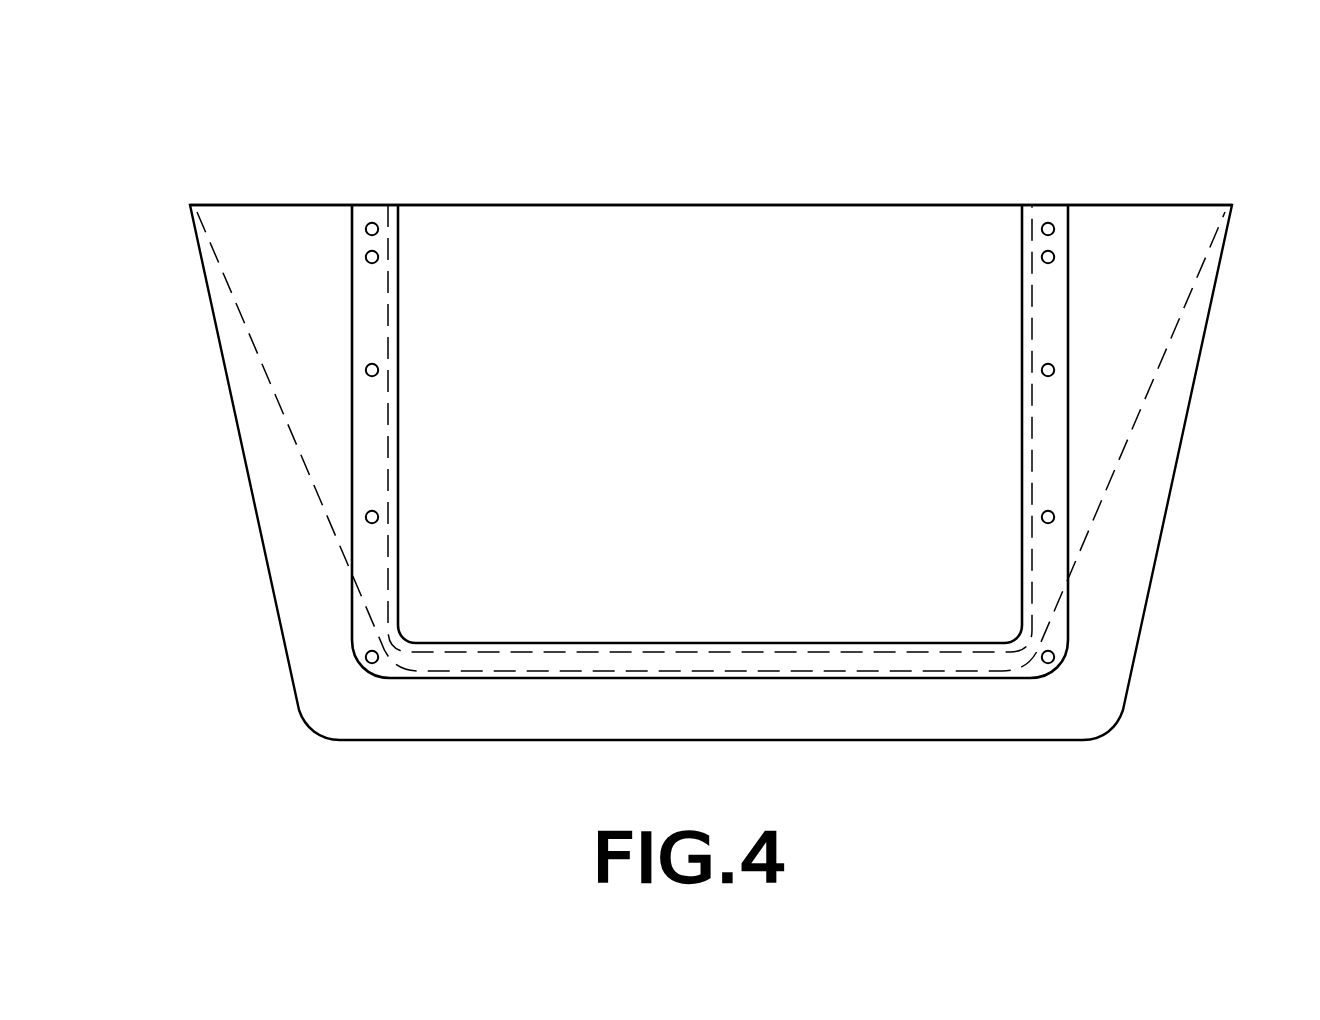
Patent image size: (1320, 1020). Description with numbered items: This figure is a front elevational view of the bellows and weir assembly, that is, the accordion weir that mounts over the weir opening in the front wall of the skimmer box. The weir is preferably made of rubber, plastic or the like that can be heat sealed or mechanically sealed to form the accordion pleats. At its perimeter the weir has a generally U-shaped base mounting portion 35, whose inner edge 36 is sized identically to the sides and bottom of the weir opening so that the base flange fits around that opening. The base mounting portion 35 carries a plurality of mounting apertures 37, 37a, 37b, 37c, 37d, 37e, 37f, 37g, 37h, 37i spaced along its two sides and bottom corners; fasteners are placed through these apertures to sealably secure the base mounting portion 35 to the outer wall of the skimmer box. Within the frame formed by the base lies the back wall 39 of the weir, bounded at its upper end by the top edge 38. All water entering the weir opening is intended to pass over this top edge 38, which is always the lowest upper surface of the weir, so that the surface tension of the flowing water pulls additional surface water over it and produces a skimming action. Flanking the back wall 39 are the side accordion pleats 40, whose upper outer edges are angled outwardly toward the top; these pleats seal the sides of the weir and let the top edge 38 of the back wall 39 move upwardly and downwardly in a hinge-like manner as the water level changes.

The base mounting portion 35 is at (382, 205).
The inner edge 36 is at (398, 262).
The mounting aperture 37 is at (1055, 230).
The mounting aperture 37a is at (1055, 258).
The mounting aperture 37b is at (1055, 372).
The mounting aperture 37c is at (1055, 517).
The mounting aperture 37d is at (1055, 657).
The mounting aperture 37e is at (365, 657).
The mounting aperture 37f is at (365, 518).
The mounting aperture 37g is at (365, 371).
The mounting aperture 37h is at (365, 259).
The mounting aperture 37i is at (365, 231).
The top edge 38 is at (698, 205).
The back wall 39 is at (720, 462).
The accordion pleats 40 is at (248, 232).